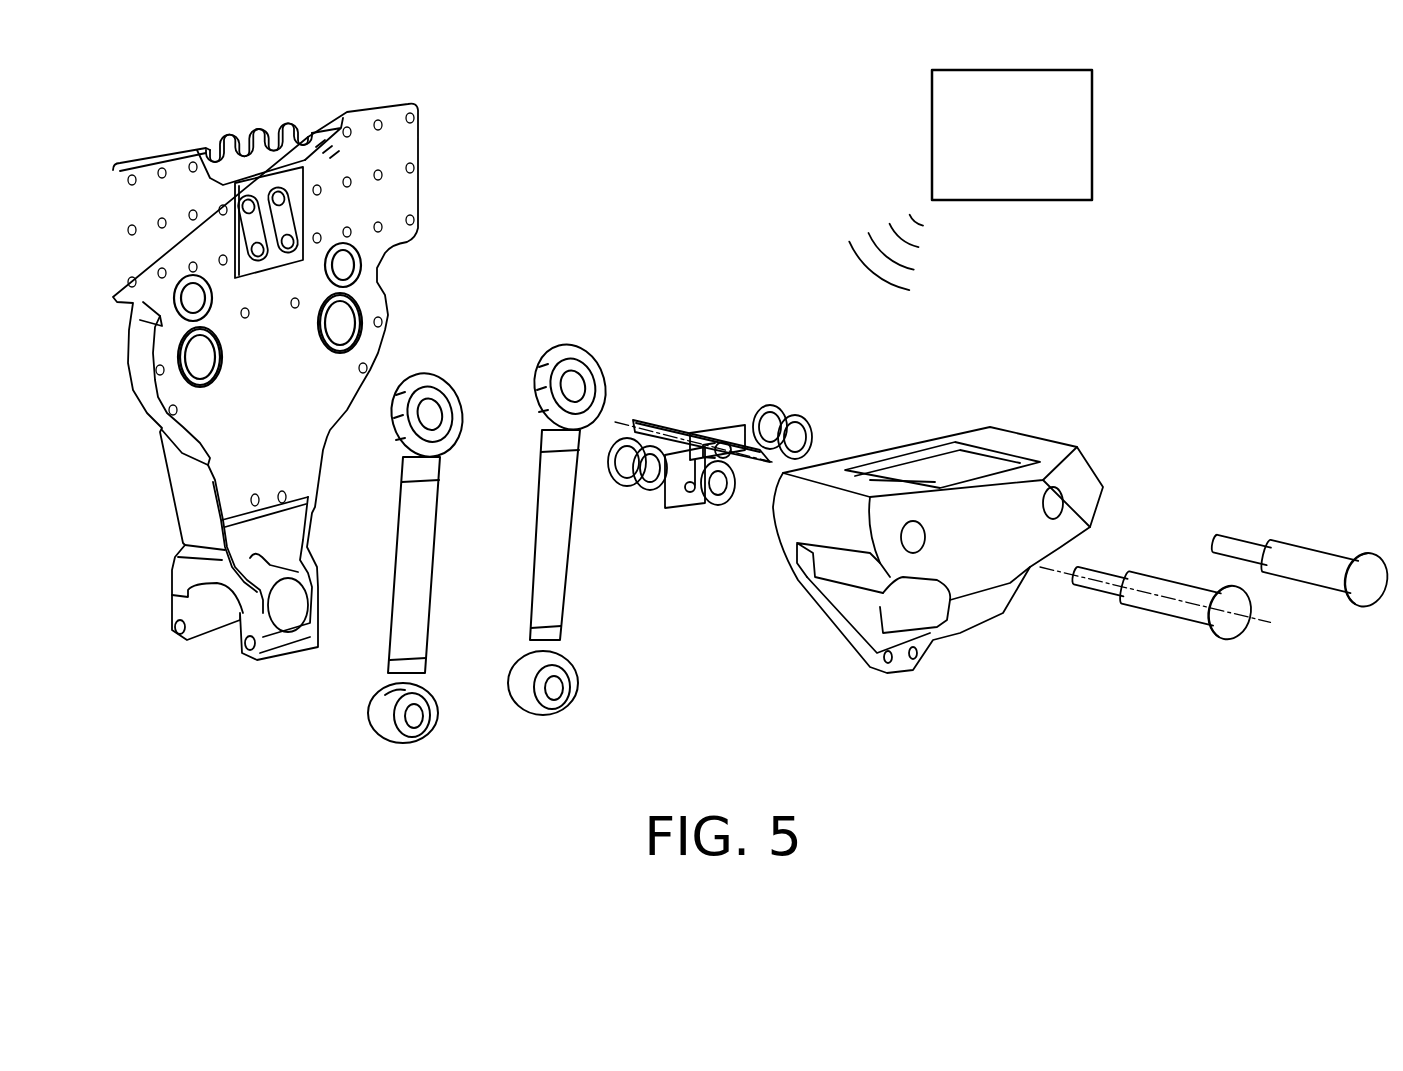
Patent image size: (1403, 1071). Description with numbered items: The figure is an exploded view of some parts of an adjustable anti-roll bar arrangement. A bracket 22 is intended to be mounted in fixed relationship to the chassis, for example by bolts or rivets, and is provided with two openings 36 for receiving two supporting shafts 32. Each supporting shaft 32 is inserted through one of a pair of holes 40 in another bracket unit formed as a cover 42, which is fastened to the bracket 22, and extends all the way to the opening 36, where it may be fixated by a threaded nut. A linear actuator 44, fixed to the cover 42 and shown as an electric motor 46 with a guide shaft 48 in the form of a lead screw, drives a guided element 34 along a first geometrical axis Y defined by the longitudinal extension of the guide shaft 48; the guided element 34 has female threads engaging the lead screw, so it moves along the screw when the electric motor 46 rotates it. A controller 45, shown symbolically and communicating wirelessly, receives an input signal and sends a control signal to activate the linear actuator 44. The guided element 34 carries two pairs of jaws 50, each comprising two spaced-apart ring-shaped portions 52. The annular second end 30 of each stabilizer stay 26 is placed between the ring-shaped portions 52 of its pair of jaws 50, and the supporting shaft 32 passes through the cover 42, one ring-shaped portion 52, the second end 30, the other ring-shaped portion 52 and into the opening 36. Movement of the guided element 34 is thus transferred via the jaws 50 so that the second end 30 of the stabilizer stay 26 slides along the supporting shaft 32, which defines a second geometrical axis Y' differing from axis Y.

The bracket 22 is at (392, 148).
The stabilizer stay 26 is at (410, 582).
The second end of stabilizer stay 30 is at (443, 373).
The supporting shaft 32 is at (1167, 607).
The guided element 34 is at (736, 413).
The opening 36 is at (345, 322).
The hole 40 is at (1067, 497).
The cover 42 is at (1017, 443).
The linear actuator 44 is at (717, 500).
The controller 45 is at (1097, 135).
The electric motor 46 is at (677, 483).
The guide shaft 48 is at (670, 427).
The pair of jaws 50 is at (787, 437).
The ring-shaped portion 52 is at (627, 483).